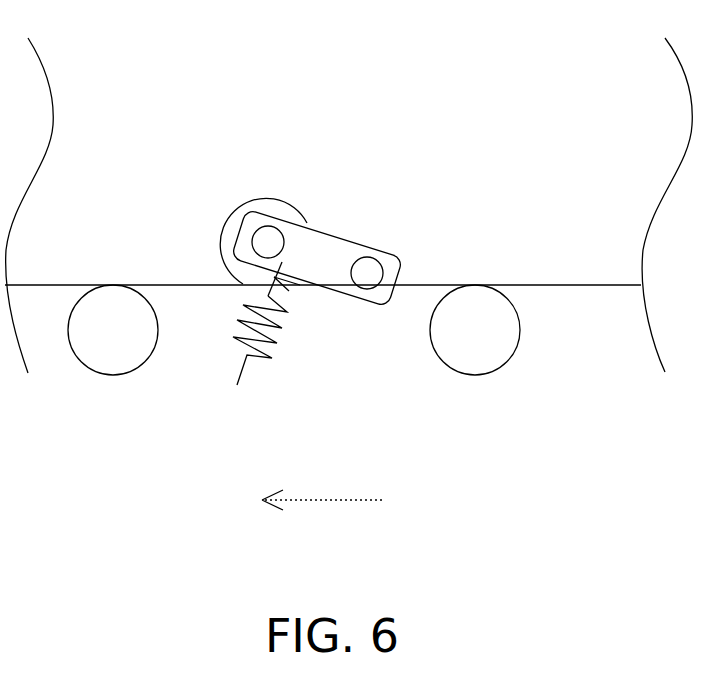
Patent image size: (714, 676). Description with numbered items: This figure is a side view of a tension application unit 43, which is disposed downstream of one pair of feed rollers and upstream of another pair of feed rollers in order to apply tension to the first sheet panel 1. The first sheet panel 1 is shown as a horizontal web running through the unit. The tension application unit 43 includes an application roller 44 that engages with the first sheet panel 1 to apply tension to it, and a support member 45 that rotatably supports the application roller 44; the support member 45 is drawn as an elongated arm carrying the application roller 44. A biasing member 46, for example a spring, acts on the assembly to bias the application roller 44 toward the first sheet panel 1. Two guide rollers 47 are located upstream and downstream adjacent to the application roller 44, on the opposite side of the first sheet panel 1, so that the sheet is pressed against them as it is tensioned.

The first sheet panel 1 is at (588, 283).
The tension application unit 43 is at (367, 112).
The application roller 44 is at (265, 197).
The support member 45 is at (332, 242).
The biasing member 46 is at (275, 342).
The guide rollers 47 is at (117, 355).